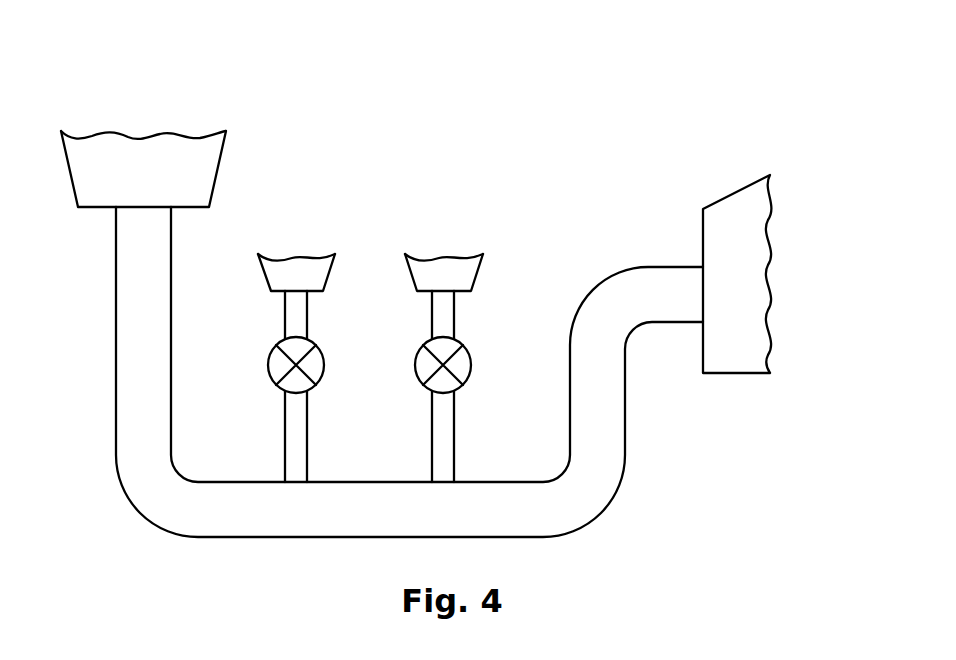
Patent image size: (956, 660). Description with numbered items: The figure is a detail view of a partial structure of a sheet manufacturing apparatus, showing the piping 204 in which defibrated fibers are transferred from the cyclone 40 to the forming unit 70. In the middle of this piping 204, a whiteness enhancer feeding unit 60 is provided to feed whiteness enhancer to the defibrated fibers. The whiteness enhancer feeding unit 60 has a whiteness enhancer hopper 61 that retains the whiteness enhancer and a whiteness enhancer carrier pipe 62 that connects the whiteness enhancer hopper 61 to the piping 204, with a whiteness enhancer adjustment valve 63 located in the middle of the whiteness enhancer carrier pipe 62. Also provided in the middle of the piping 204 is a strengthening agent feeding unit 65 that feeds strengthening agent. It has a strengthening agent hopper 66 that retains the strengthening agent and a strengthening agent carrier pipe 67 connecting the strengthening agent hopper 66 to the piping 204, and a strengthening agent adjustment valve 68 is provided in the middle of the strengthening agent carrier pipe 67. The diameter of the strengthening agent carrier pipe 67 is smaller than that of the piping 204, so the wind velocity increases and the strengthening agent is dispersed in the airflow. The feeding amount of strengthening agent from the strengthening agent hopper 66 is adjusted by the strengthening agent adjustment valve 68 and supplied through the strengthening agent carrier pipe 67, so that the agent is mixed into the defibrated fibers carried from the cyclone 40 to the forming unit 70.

The cyclone 40 is at (143, 142).
The whiteness enhancer feeding unit 60 is at (286, 324).
The whiteness enhancer hopper 61 is at (293, 262).
The whiteness enhancer carrier pipe 62 is at (291, 430).
The whiteness enhancer adjustment valve 63 is at (269, 362).
The strengthening agent feeding unit 65 is at (434, 324).
The strengthening agent hopper 66 is at (441, 260).
The strengthening agent carrier pipe 67 is at (440, 430).
The strengthening agent adjustment valve 68 is at (417, 362).
The forming unit 70 is at (760, 293).
The piping 204 is at (617, 426).